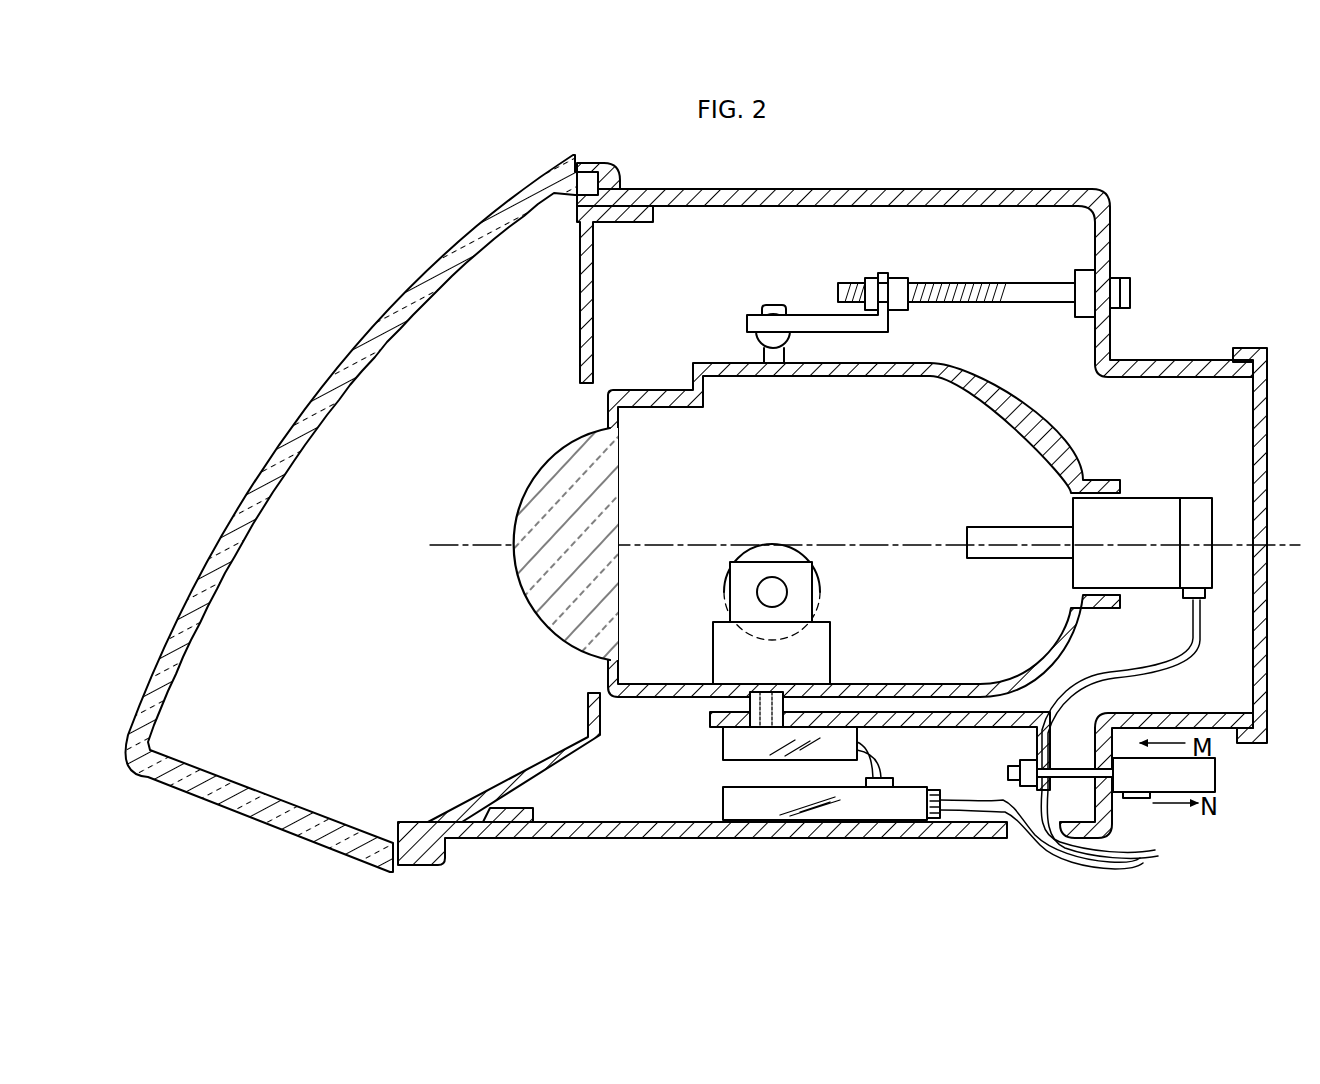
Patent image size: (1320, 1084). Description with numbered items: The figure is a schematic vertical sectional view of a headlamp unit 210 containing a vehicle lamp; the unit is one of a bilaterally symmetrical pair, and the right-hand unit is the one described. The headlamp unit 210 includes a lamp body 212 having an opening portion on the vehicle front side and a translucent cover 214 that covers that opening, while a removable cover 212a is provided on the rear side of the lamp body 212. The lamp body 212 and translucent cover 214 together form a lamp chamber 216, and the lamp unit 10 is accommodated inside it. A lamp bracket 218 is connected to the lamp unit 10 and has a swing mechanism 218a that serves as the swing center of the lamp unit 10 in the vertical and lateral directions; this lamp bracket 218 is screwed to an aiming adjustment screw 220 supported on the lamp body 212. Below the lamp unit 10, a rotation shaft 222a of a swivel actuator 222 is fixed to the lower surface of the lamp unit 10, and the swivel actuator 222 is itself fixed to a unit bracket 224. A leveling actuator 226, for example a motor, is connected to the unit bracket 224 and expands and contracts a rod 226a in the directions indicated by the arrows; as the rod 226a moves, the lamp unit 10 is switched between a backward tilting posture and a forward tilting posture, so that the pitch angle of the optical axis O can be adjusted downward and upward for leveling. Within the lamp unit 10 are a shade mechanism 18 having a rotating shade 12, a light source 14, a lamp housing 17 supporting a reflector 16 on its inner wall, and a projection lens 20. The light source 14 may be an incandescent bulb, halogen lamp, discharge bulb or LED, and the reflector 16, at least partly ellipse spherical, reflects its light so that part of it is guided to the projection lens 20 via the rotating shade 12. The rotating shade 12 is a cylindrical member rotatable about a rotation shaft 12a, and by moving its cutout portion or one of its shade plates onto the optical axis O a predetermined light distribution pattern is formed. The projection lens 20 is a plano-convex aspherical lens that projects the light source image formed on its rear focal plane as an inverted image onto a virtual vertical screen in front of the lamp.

The headlamp unit 210 is at (838, 489).
The lamp body 212 is at (797, 190).
The removable cover 212a is at (1238, 348).
The translucent cover 214 is at (402, 292).
The lamp chamber 216 is at (530, 340).
The lamp bracket 218 is at (822, 322).
The swing mechanism 218a is at (757, 337).
The aiming adjustment screw 220 is at (1030, 292).
The lamp unit 10 is at (863, 513).
The reflector 16 is at (932, 380).
The lamp housing 17 is at (1010, 395).
The projection lens 20 is at (545, 462).
The rotating shade 12 is at (801, 572).
The rotation shaft 12a is at (787, 595).
The shade mechanism 18 is at (766, 538).
The light source 14 is at (1016, 540).
The swivel actuator 222 is at (735, 745).
The rotation shaft 222a is at (750, 710).
The unit bracket 224 is at (915, 725).
The leveling actuator 226 is at (1215, 776).
The rod 226a is at (1080, 770).
The optical axis O is at (456, 590).